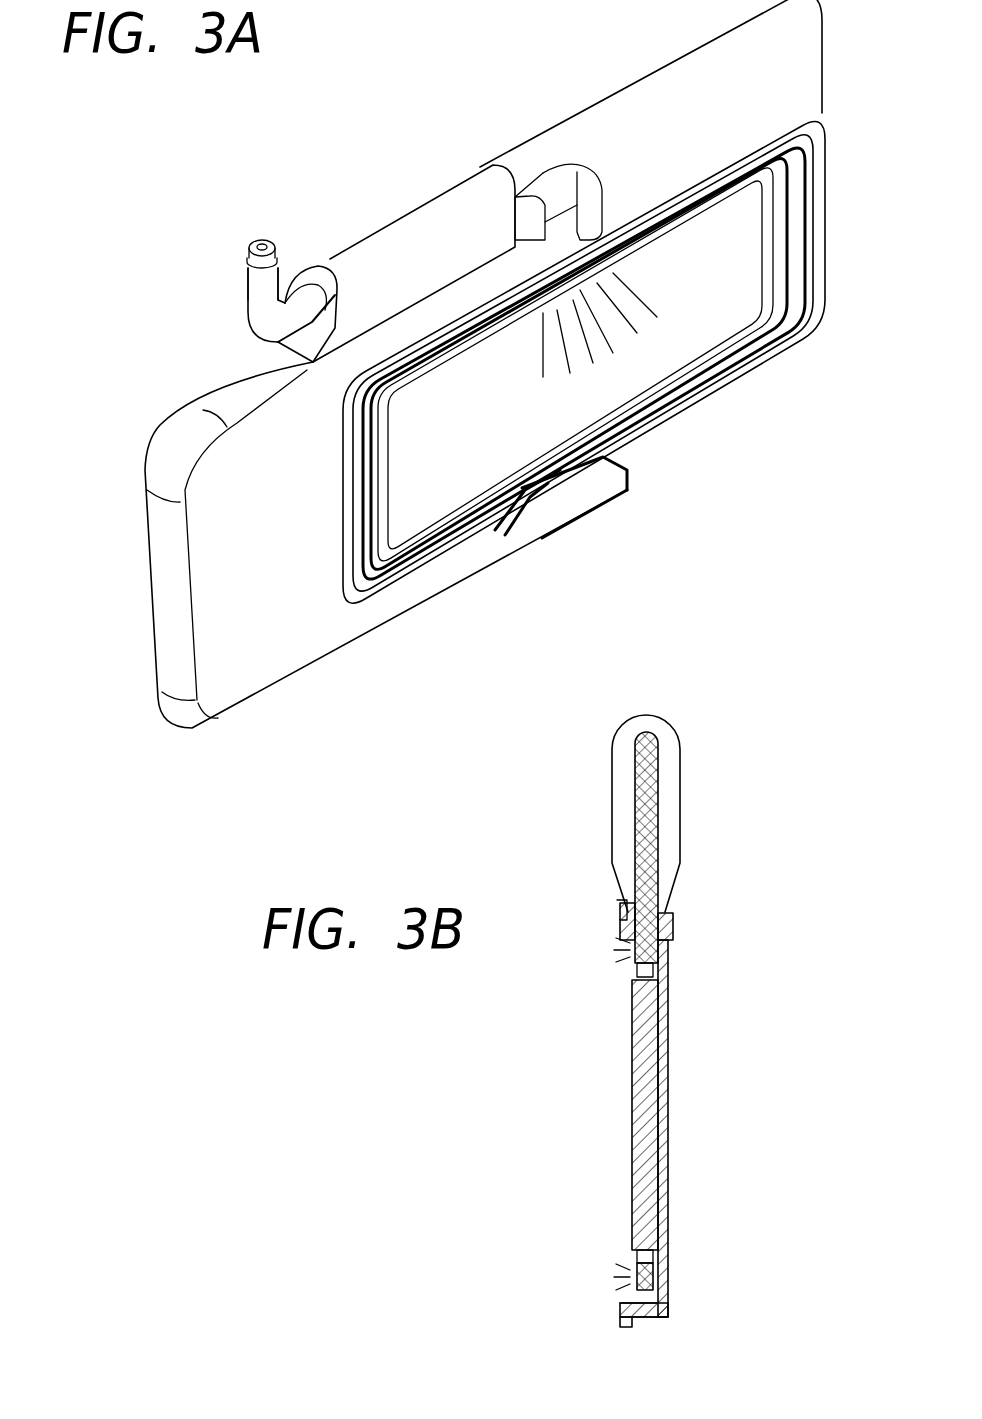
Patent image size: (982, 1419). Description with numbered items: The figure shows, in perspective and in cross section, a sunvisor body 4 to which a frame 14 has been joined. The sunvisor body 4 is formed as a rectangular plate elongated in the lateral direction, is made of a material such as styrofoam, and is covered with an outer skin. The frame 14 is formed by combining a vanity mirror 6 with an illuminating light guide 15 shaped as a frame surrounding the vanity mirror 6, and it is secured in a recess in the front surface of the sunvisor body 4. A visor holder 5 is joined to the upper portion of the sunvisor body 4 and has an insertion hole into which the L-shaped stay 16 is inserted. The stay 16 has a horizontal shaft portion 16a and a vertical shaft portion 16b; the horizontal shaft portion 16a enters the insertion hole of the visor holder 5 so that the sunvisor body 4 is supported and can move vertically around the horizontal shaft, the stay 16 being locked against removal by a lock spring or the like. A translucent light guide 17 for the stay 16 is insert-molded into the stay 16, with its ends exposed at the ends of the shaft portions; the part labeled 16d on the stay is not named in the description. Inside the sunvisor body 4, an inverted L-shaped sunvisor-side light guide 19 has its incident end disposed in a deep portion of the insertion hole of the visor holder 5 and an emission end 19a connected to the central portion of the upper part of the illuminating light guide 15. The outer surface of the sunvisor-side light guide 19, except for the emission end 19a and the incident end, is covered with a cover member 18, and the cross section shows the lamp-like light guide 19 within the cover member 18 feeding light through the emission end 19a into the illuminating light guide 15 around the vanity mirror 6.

In FIG. 3A, the sunvisor body 4 is at (252, 673).
In FIG. 3A, the visor holder 5 is at (400, 222).
In FIG. 3A, the vanity mirror 6 is at (655, 360).
In FIG. 3B, the vanity mirror 6 is at (645, 1150).
In FIG. 3A, the frame 14 is at (793, 237).
In FIG. 3B, the frame 14 is at (662, 1287).
In FIG. 3A, the illuminating light guide 15 is at (782, 300).
In FIG. 3B, the illuminating light guide 15 is at (630, 958).
In FIG. 3A, the stay 16 is at (247, 262).
In FIG. 3A, the horizontal shaft portion 16a is at (292, 300).
In FIG. 3A, the vertical shaft portion 16b is at (252, 292).
In FIG. 3A, the collar 16d is at (247, 262).
In FIG. 3A, the light guide for the stay 17 is at (262, 240).
In FIG. 3A, the cover member 18 is at (545, 185).
In FIG. 3B, the cover member 18 is at (665, 775).
In FIG. 3B, the sunvisor-side light guide 19 is at (652, 815).
In FIG. 3B, the emission end 19a is at (670, 945).